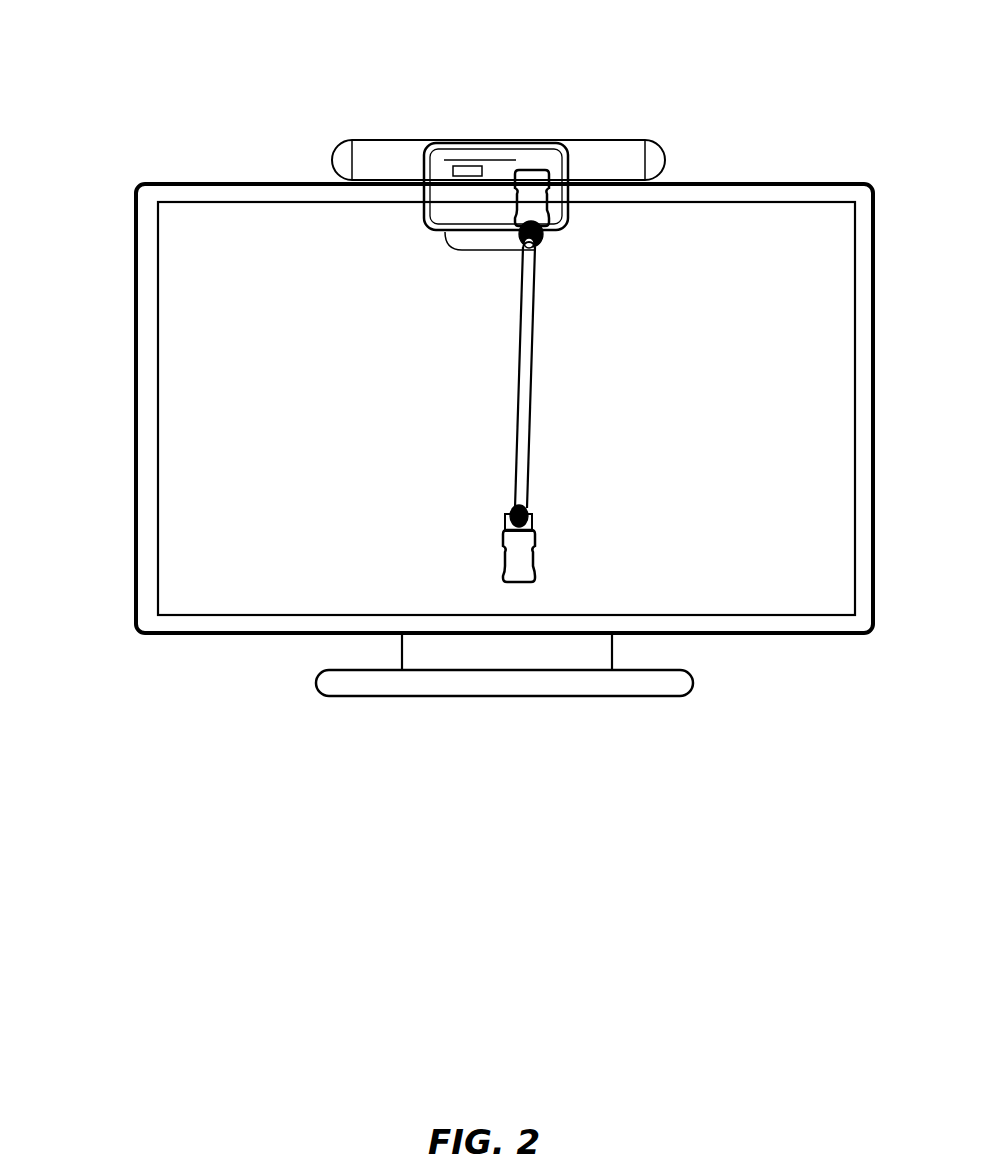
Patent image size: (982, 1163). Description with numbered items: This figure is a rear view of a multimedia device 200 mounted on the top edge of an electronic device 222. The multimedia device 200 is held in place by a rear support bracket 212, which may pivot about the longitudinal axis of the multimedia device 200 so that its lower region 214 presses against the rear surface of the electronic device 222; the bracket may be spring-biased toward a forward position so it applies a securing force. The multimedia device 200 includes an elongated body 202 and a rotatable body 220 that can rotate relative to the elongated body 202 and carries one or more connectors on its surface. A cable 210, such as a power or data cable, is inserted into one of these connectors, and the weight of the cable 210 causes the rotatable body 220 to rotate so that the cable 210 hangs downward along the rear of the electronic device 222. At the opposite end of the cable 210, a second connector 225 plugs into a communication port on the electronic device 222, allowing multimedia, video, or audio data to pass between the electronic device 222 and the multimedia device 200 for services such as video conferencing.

The multimedia device 200 is at (364, 98).
The elongated body 202 is at (338, 146).
The cable 210 is at (538, 274).
The rear support bracket 212 is at (428, 222).
The lower region 214 is at (497, 251).
The rotatable body 220 is at (505, 148).
The electronic device 222 is at (136, 226).
The second connector 225 is at (537, 558).